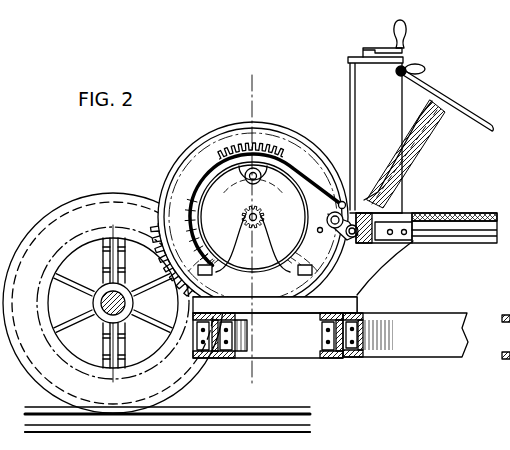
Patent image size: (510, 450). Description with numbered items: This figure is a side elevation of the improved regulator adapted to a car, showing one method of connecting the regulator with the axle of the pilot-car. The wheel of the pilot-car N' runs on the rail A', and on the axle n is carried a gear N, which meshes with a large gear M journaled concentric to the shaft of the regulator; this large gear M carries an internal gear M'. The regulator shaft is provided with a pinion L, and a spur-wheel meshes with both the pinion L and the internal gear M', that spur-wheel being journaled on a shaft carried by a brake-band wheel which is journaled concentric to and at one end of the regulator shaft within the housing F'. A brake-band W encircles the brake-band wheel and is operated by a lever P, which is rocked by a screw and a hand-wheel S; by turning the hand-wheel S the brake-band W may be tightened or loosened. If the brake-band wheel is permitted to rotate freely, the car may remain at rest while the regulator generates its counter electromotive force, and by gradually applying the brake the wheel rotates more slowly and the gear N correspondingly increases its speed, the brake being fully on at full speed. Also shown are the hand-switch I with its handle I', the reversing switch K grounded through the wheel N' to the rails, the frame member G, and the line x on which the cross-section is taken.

The rail A' is at (267, 381).
The gear N is at (113, 303).
The wheel of the pilot-car N' is at (113, 303).
The axle n is at (100, 303).
The large gear M is at (163, 253).
The internal gear M' is at (230, 141).
The brake-band W is at (194, 203).
The housing F' is at (285, 211).
The pinion L is at (263, 217).
The lever P is at (350, 238).
The hand-switch I is at (375, 135).
The handle I' is at (391, 38).
The switch K is at (419, 65).
The hand-wheel S is at (428, 137).
The beam G is at (433, 121).
The section line x is at (250, 227).